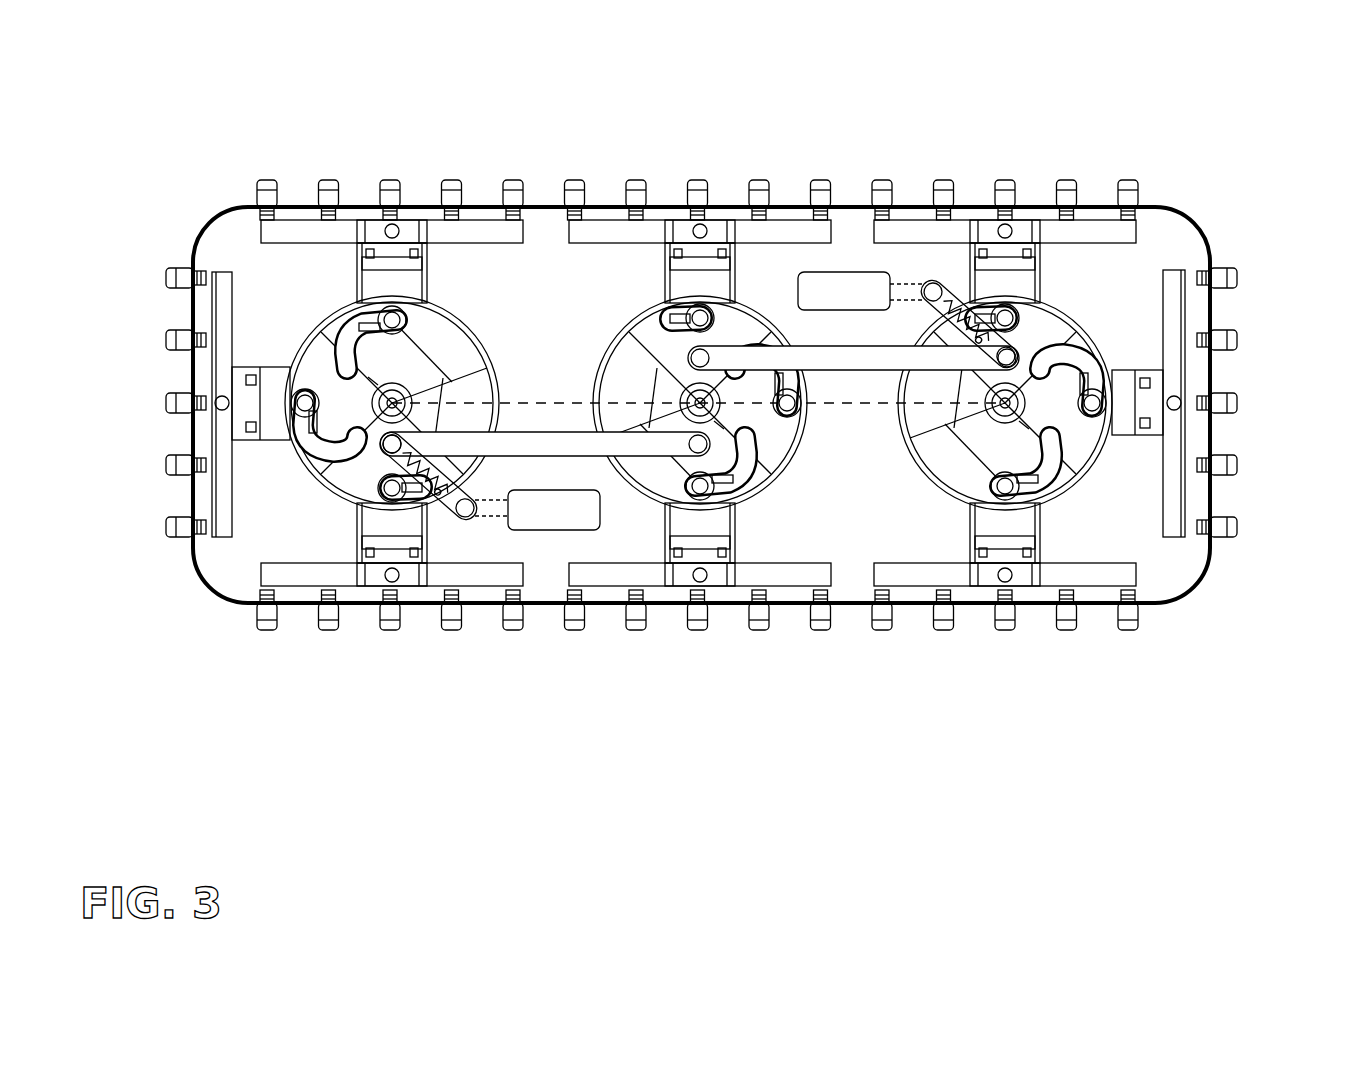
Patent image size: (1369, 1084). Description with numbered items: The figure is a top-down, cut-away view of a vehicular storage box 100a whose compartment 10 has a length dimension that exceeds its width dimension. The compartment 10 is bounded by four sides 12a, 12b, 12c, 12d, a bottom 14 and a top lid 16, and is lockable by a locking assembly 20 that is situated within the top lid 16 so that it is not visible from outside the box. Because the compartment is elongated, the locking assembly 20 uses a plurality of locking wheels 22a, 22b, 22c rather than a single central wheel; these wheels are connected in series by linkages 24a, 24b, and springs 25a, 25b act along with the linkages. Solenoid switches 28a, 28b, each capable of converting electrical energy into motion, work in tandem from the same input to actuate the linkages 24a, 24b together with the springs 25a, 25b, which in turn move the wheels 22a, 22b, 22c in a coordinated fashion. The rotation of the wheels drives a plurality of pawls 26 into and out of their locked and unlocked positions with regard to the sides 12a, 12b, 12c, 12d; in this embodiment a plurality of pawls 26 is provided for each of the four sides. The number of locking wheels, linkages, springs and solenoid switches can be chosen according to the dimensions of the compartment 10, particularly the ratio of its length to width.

The compartment 10 is at (230, 236).
The vehicular storage box 100a is at (444, 131).
The side 12a is at (662, 200).
The side 12b is at (1218, 312).
The side 12c is at (975, 608).
The side 12d is at (190, 316).
The bottom 14 is at (287, 275).
The top lid 16 is at (781, 266).
The locking assembly 20 is at (739, 408).
The locking wheel 22a is at (440, 337).
The locking wheel 22b is at (782, 447).
The locking wheel 22c is at (1045, 330).
The linkage 24a is at (525, 440).
The linkage 24b is at (867, 362).
The spring 25a is at (447, 512).
The spring 25b is at (953, 305).
The pawls 26 is at (570, 196).
The solenoid switch 28a is at (546, 532).
The solenoid switch 28b is at (855, 287).